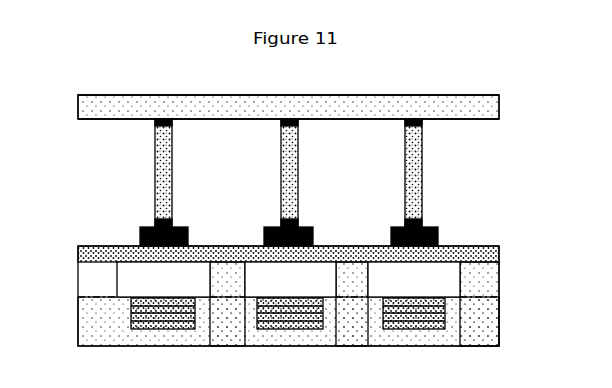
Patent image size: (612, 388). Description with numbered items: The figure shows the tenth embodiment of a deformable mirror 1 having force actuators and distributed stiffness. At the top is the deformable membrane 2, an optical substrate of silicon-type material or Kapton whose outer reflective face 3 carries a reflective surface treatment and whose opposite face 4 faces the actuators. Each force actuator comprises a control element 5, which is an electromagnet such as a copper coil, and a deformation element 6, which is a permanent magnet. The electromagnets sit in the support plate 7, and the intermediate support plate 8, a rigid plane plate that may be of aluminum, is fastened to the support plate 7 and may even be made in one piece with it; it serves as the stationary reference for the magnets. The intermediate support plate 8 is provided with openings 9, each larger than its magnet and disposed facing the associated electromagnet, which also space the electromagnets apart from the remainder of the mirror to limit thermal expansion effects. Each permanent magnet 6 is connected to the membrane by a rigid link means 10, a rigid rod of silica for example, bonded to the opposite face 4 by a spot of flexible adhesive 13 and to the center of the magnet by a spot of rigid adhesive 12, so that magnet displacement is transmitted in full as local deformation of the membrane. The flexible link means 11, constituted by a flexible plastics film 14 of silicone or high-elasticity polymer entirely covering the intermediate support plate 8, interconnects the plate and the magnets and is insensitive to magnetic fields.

The deformable mirror 1 is at (391, 82).
The deformable membrane 2 is at (490, 107).
The reflective face 3 is at (466, 96).
The opposite face 4 is at (466, 119).
The control element 5 is at (160, 320).
The deformation element 6 is at (140, 233).
The support plate 7 is at (490, 332).
The intermediate support plate 8 is at (485, 283).
The opening 9 is at (135, 290).
The rigid link means 10 is at (165, 157).
The flexible link means 11 is at (512, 254).
The spot of rigid adhesive 12 is at (165, 220).
The spot of flexible adhesive 13 is at (163, 119).
The flexible plastics film 14 is at (485, 258).